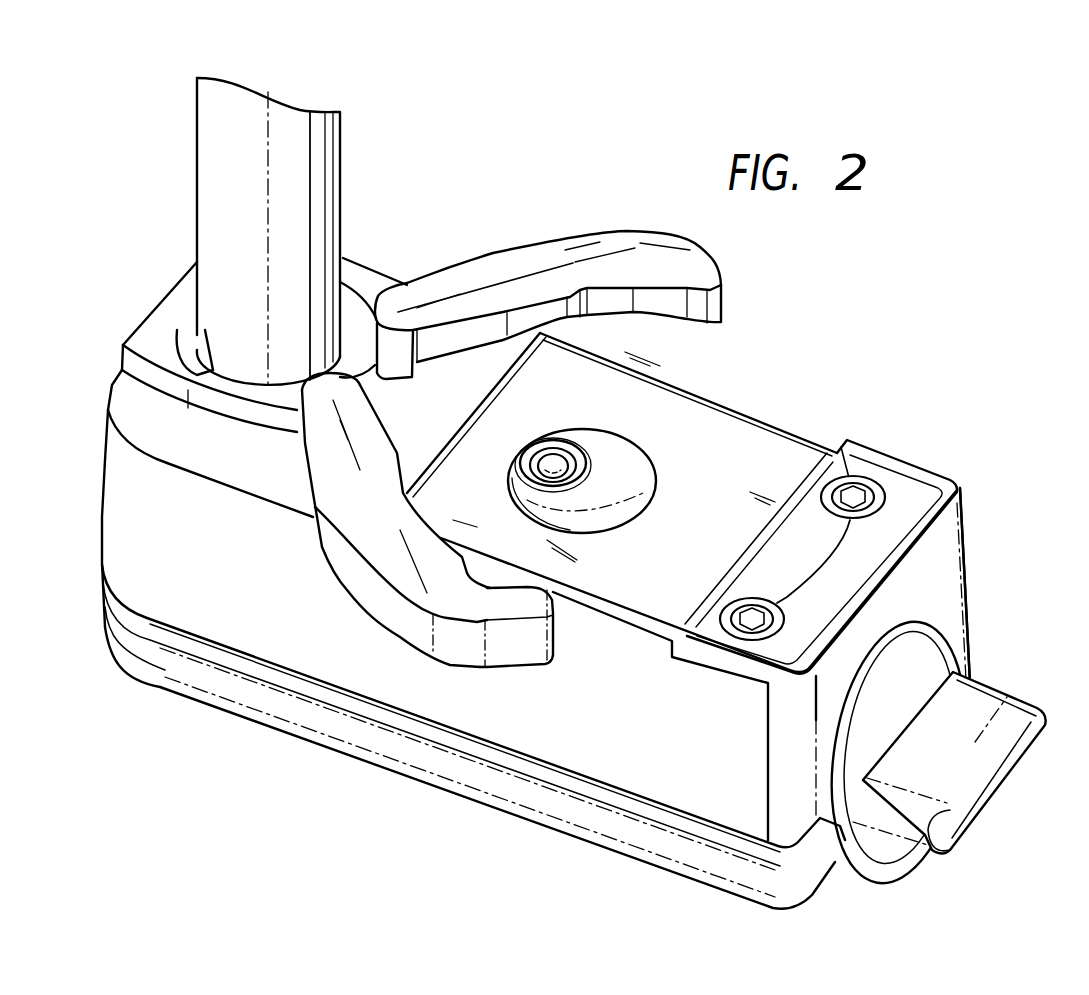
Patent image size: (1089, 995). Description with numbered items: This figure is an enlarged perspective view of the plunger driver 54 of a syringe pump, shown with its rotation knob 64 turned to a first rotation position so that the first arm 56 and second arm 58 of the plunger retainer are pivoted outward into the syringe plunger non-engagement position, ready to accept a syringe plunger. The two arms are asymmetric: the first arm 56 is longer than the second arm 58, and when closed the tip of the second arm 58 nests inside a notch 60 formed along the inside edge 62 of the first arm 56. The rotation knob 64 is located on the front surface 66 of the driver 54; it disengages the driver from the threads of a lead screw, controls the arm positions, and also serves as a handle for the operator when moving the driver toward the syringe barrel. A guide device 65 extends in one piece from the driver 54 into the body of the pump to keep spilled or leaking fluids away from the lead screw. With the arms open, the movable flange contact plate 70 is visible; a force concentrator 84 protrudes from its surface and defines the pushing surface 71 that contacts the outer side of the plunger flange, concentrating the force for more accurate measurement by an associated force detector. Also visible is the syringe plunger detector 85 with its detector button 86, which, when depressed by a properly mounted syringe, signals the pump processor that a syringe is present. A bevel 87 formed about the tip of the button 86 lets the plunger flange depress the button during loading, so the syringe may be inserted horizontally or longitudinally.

The plunger driver 54 is at (713, 888).
The first arm 56 is at (380, 547).
The second arm 58 is at (547, 255).
The notch 60 is at (485, 587).
The inside edge 62 is at (627, 290).
The rotation knob 64 is at (970, 703).
The guide device 65 is at (323, 150).
The front surface 66 is at (937, 562).
The movable flange contact plate 70 is at (622, 615).
The pushing surface 71 is at (640, 470).
The force concentrator 84 is at (632, 467).
The syringe plunger detector 85 is at (553, 468).
The detector button 86 is at (560, 458).
The bevel 87 is at (573, 455).